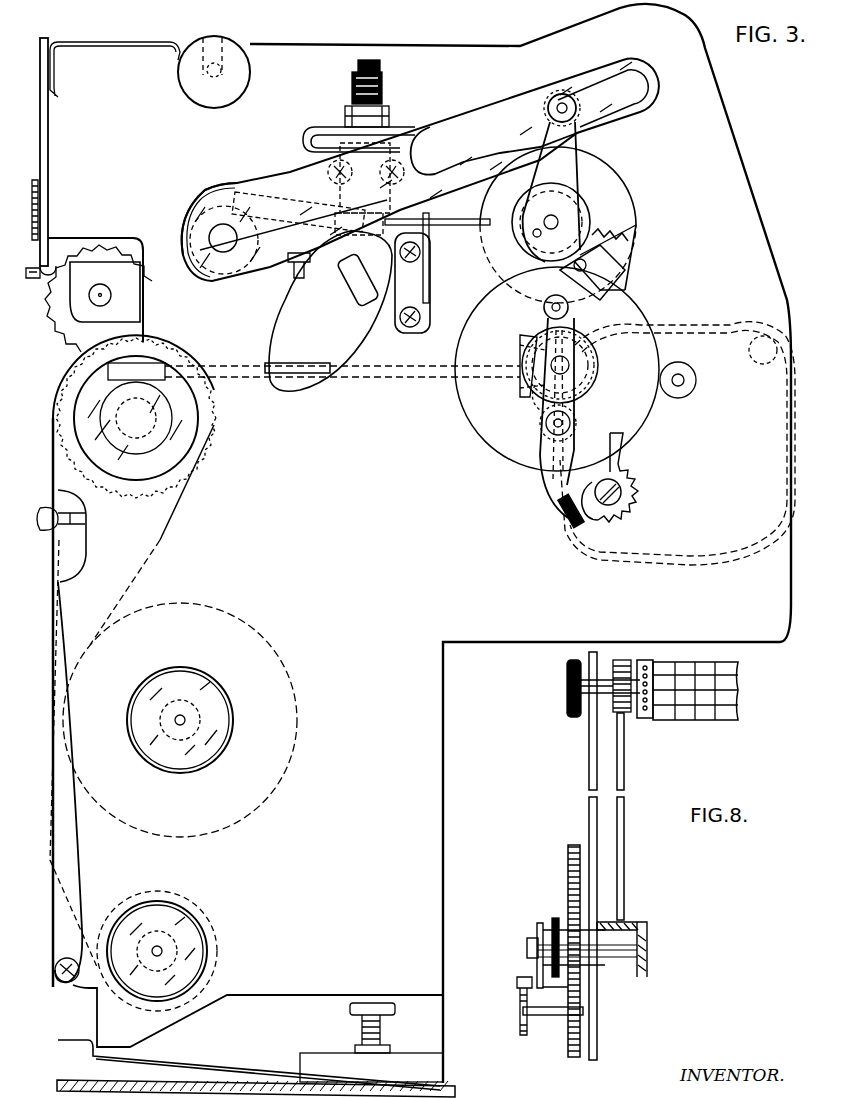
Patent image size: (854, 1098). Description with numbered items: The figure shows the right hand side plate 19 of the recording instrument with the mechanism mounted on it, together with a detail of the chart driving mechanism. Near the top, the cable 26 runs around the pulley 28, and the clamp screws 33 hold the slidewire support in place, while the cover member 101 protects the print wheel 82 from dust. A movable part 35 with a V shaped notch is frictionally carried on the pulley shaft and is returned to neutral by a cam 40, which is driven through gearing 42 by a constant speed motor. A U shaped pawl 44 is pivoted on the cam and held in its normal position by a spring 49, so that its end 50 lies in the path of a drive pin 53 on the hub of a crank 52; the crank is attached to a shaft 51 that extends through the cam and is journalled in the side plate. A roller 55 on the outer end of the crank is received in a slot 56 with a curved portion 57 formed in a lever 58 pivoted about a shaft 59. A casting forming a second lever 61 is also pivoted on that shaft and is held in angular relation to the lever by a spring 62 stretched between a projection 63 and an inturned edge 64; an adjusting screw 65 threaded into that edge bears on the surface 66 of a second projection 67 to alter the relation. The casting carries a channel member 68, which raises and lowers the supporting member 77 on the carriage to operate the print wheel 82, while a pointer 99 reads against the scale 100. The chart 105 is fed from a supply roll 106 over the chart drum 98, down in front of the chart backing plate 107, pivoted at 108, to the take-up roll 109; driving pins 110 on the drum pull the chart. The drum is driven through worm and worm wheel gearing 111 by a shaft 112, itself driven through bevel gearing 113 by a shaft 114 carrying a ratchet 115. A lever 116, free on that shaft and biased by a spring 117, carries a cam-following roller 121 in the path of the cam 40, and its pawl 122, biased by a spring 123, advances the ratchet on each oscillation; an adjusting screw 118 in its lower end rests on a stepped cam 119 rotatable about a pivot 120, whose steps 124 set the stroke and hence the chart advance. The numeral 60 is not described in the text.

In FIG. 3, the side plate 19 is at (445, 752).
In FIG. 8, the side plate 19 is at (589, 763).
In FIG. 3, the cable 26 is at (303, 135).
In FIG. 3, the pulley 28 is at (320, 125).
In FIG. 3, the clamp screws 33 is at (237, 57).
In FIG. 3, the movable part 35 is at (460, 226).
In FIG. 3, the cam 40 is at (632, 257).
In FIG. 3, the gearing 42 is at (676, 360).
In FIG. 8, the gearing 42 is at (573, 870).
In FIG. 3, the U shaped pawl 44 is at (580, 281).
In FIG. 3, the spring 49 is at (610, 233).
In FIG. 3, the pawl end 50 is at (590, 208).
In FIG. 3, the shaft 51 is at (559, 219).
In FIG. 3, the crank 52 is at (573, 173).
In FIG. 3, the drive pin 53 is at (500, 263).
In FIG. 3, the roller 55 is at (580, 98).
In FIG. 3, the slot 56 is at (640, 105).
In FIG. 3, the curved portion 57 is at (500, 108).
In FIG. 3, the lever 58 is at (440, 122).
In FIG. 3, the shaft 59 is at (205, 272).
In FIG. 3, the pivot 60 is at (185, 258).
In FIG. 3, the second lever casting 61 is at (265, 282).
In FIG. 3, the spring 62 is at (193, 200).
In FIG. 3, the projection 63 is at (253, 200).
In FIG. 3, the inturned edge 64 is at (320, 233).
In FIG. 3, the adjusting screw 65 is at (292, 282).
In FIG. 3, the surface 66 is at (322, 300).
In FIG. 3, the second projection 67 is at (350, 300).
In FIG. 3, the channel member 68 is at (385, 315).
In FIG. 3, the supporting member 77 is at (138, 262).
In FIG. 3, the print wheel 82 is at (72, 335).
In FIG. 3, the chart drum 98 is at (110, 493).
In FIG. 3, the pointer 99 is at (33, 280).
In FIG. 3, the scale 100 is at (48, 102).
In FIG. 3, the cover member 101 is at (120, 43).
In FIG. 3, the chart 105 is at (173, 527).
In FIG. 8, the chart 105 is at (717, 712).
In FIG. 3, the supply roll 106 is at (277, 653).
In FIG. 3, the chart backing plate 107 is at (72, 870).
In FIG. 3, the pivot 108 is at (53, 985).
In FIG. 3, the chart take-up roll 109 is at (207, 907).
In FIG. 3, the driving pins 110 is at (220, 423).
In FIG. 8, the driving pins 110 is at (647, 720).
In FIG. 3, the worm and worm wheel gearing 111 is at (178, 360).
In FIG. 8, the worm and worm wheel gearing 111 is at (613, 703).
In FIG. 3, the shaft 112 is at (305, 385).
In FIG. 8, the shaft 112 is at (625, 768).
In FIG. 3, the bevel gearing 113 is at (523, 383).
In FIG. 8, the bevel gearing 113 is at (648, 947).
In FIG. 3, the shaft 114 is at (550, 364).
In FIG. 8, the shaft 114 is at (627, 962).
In FIG. 3, the ratchet 115 is at (582, 362).
In FIG. 8, the ratchet 115 is at (555, 918).
In FIG. 3, the lever 116 is at (547, 488).
In FIG. 8, the lever 116 is at (537, 930).
In FIG. 8, the spring 117 is at (545, 921).
In FIG. 3, the adjusting screw 118 is at (578, 532).
In FIG. 8, the adjusting screw 118 is at (517, 993).
In FIG. 3, the cam 119 is at (643, 480).
In FIG. 8, the cam 119 is at (522, 1016).
In FIG. 3, the pivot 120 is at (627, 510).
In FIG. 3, the cam-following roller 121 is at (545, 312).
In FIG. 8, the cam-following roller 121 is at (527, 950).
In FIG. 3, the pawl 122 is at (530, 400).
In FIG. 3, the spring 123 is at (577, 422).
In FIG. 3, the steps 124 is at (637, 453).